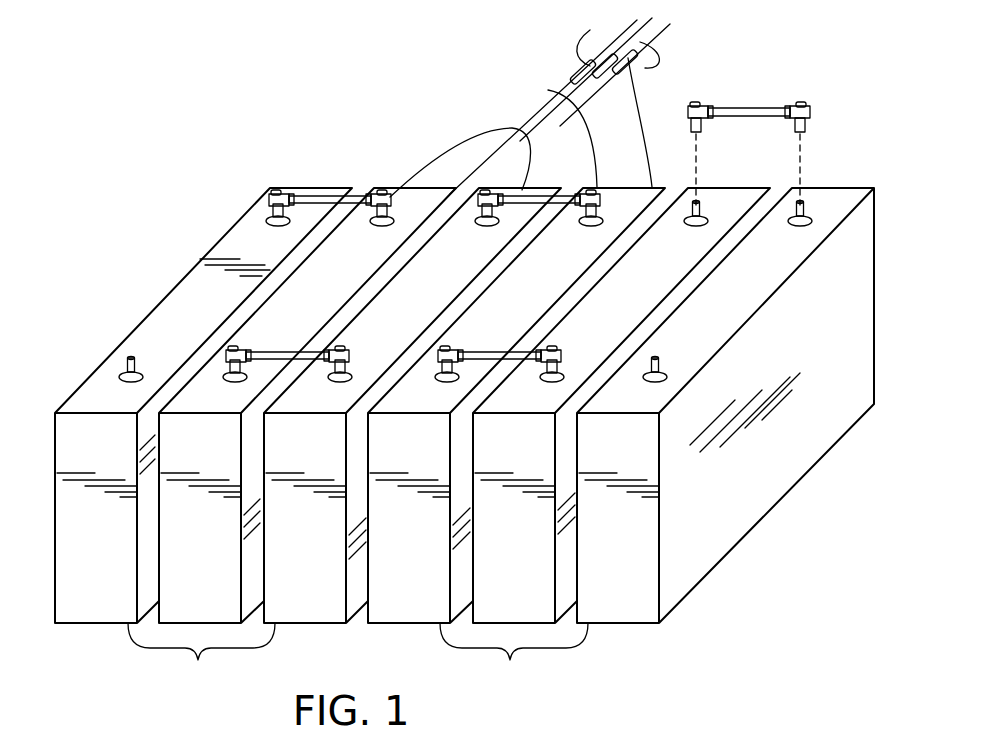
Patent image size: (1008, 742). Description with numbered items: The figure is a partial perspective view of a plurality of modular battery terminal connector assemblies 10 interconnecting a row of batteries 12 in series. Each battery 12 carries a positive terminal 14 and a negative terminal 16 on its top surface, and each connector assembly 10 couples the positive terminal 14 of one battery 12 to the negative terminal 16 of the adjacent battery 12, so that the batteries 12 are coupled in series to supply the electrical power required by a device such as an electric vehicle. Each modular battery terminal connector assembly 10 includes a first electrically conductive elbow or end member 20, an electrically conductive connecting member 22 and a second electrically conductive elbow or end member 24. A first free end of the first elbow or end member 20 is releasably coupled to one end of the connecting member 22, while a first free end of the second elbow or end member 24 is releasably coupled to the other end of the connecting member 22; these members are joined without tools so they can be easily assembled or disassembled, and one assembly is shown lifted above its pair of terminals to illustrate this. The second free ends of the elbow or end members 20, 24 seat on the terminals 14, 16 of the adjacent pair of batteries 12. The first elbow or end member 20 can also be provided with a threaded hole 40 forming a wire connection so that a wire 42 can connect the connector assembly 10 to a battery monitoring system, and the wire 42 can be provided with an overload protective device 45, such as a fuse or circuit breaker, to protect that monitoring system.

The modular battery terminal connector assembly 10 is at (528, 232).
The battery 12 is at (464, 439).
The positive terminal 14 is at (122, 365).
The negative terminal 16 is at (266, 221).
The first electrically conductive elbow or end member 20 is at (385, 194).
The electrically conductive connecting member 22 is at (328, 196).
The second electrically conductive elbow or end member 24 is at (270, 196).
The threaded hole 40 is at (805, 103).
The wire 42 is at (522, 122).
The overload protective device 45 is at (603, 37).